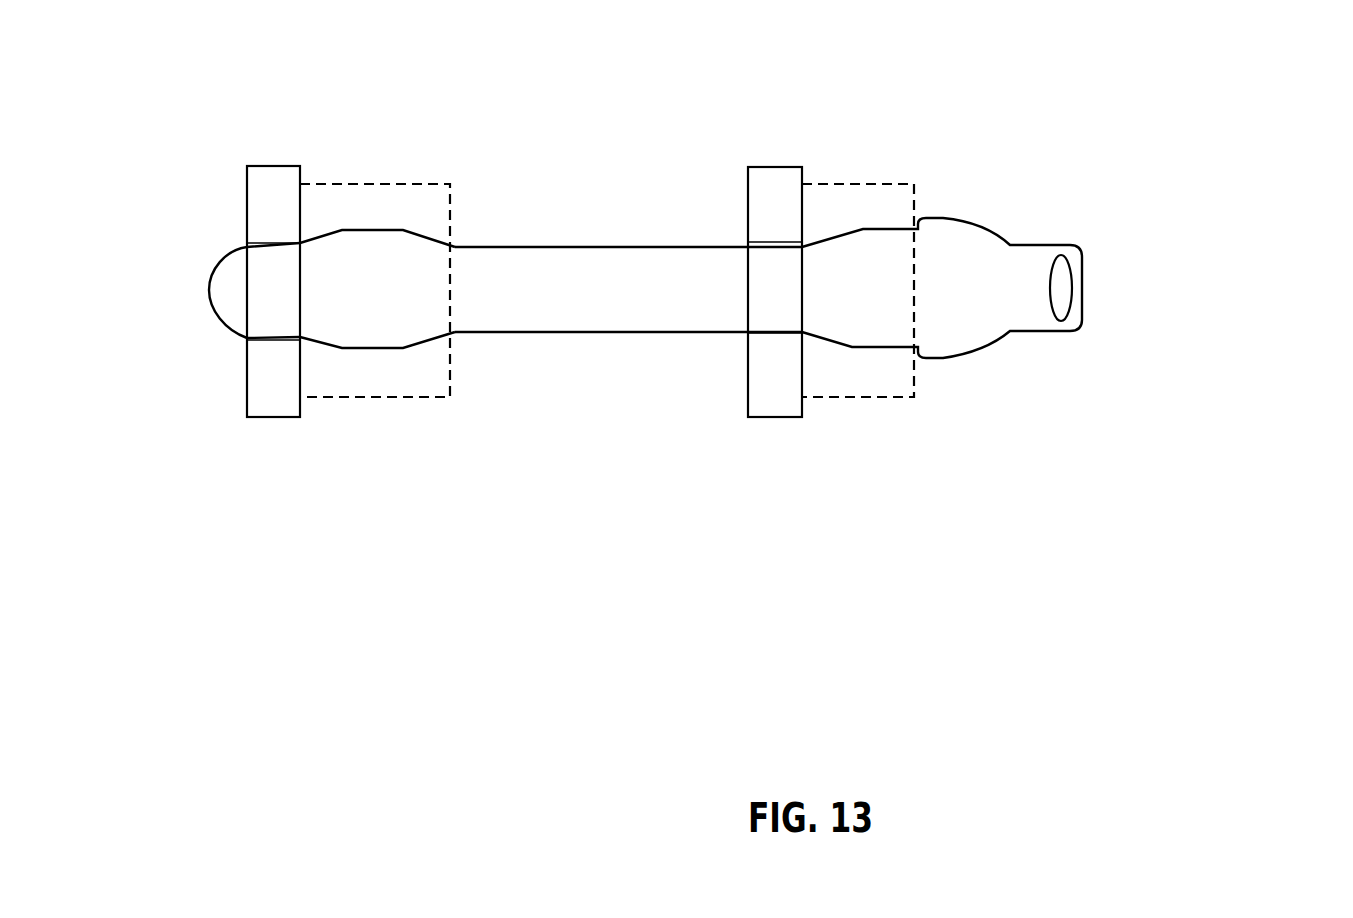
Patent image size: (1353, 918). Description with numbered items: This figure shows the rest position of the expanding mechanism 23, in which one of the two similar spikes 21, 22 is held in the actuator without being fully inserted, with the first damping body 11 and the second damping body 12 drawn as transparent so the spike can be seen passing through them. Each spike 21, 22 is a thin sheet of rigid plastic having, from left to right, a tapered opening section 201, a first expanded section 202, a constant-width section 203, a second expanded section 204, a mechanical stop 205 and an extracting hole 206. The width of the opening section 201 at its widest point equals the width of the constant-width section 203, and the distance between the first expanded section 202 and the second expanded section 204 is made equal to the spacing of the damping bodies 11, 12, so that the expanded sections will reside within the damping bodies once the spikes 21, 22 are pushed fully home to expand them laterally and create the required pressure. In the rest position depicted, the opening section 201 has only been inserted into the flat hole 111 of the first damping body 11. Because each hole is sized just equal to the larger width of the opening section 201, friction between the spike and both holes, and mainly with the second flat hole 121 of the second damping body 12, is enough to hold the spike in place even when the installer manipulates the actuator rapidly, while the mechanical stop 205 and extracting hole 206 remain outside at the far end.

The first damping body 11 is at (277, 166).
The flat hole 111 is at (247, 338).
The second damping body 12 is at (762, 167).
The second flat hole 121 is at (748, 337).
The tapered opening section 201 is at (230, 258).
The first expanded section 202 is at (392, 184).
The constant-width section 203 is at (570, 247).
The second expanded section 204 is at (850, 184).
The mechanical stop 205 is at (947, 217).
The extracting hole 206 is at (1060, 290).
The spike 21 is at (481, 221).
The spike 22 is at (968, 221).
The expanding mechanism 23 is at (751, 221).